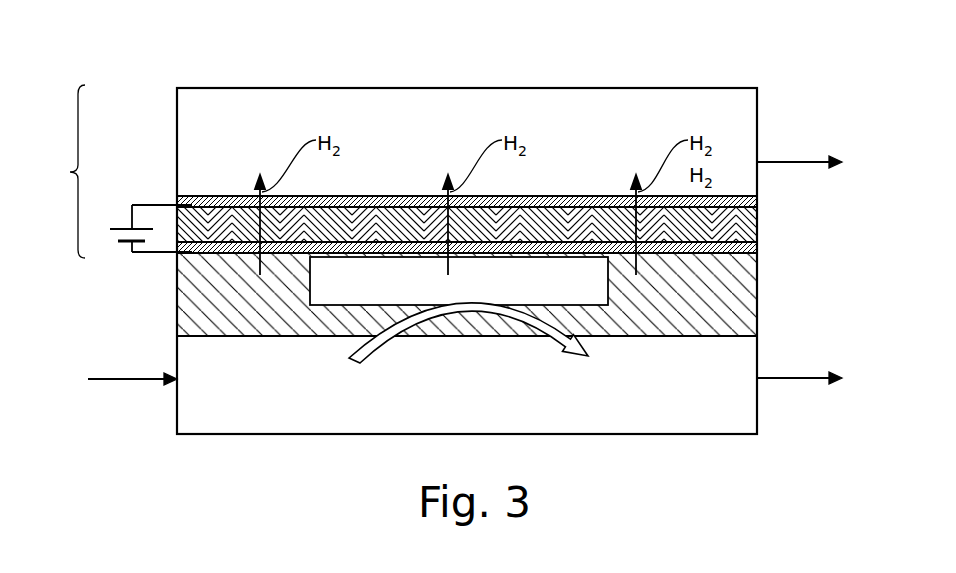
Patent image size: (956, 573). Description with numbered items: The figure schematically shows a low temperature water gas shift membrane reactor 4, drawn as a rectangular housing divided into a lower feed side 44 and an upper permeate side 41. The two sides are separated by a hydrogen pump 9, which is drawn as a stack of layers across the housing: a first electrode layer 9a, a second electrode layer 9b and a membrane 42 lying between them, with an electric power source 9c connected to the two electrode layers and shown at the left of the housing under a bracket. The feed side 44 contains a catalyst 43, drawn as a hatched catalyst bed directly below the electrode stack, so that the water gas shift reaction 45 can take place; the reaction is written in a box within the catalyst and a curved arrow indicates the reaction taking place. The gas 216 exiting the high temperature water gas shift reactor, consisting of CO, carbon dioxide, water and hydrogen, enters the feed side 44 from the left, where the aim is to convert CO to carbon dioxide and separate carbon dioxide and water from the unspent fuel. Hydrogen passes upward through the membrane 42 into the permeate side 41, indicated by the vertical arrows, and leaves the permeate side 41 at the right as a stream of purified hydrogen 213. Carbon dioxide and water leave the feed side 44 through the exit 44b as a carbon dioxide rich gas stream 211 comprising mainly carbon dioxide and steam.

The low temperature water gas shift membrane reactor 4 is at (752, 58).
The permeate side 41 is at (447, 97).
The membrane 42 is at (750, 230).
The catalyst 43 is at (750, 303).
The feed side 44 is at (568, 422).
The exit 44b is at (765, 377).
The water gas shift reaction 45 is at (567, 350).
The hydrogen pump 9 is at (407, 205).
The first electrode layer 9a is at (193, 254).
The second electrode layer 9b is at (207, 198).
The electric power source 9c is at (132, 205).
The carbon dioxide rich gas stream 211 is at (798, 380).
The stream of purified hydrogen 213 is at (797, 160).
The gas exiting the high temperature water gas shift reactor 216 is at (121, 382).